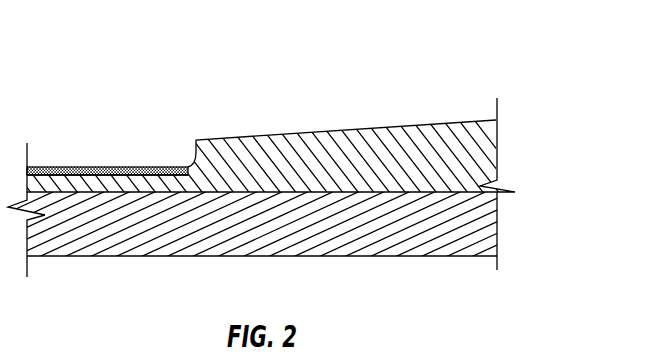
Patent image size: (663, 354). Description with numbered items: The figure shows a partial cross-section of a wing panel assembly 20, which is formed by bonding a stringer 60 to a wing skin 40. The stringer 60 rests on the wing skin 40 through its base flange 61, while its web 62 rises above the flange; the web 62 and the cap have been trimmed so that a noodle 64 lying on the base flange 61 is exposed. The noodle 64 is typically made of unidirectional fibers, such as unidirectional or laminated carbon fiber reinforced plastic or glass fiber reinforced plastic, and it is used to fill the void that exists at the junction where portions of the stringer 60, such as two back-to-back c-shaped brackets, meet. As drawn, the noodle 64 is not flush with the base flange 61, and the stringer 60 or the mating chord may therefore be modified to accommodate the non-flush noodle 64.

The wing panel assembly 20 is at (271, 93).
The wing skin 40 is at (182, 257).
The stringer 60 is at (292, 138).
The base flange 61 is at (78, 182).
The web 62 is at (358, 130).
The noodle 64 is at (150, 167).